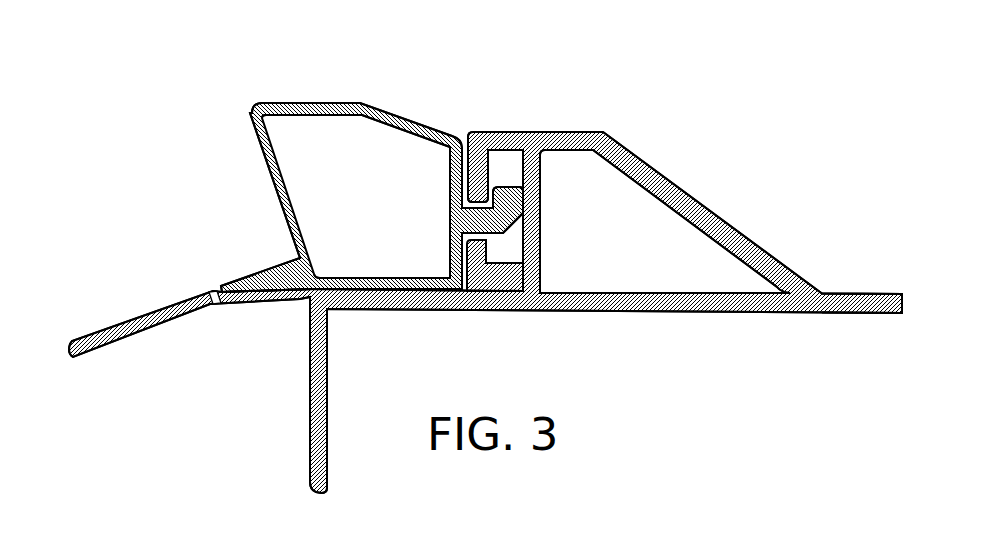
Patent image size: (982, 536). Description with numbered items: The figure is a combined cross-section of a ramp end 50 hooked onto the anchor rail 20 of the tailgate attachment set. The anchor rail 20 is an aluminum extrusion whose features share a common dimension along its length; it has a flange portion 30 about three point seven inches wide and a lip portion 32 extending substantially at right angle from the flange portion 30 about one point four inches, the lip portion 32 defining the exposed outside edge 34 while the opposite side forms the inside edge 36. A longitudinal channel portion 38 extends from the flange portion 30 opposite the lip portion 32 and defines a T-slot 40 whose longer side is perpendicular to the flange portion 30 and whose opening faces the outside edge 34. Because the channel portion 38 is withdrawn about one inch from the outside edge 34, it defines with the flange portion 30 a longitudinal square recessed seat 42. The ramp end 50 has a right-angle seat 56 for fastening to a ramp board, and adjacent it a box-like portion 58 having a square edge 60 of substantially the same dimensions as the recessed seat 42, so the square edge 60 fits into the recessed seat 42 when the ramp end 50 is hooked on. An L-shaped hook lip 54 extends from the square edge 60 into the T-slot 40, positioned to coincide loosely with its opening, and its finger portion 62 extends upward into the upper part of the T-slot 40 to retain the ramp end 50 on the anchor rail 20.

The anchor rail 20 is at (723, 117).
The flange portion 30 is at (594, 313).
The lip portion 32 is at (310, 428).
The outside edge 34 is at (300, 308).
The inside edge 36 is at (888, 313).
The channel portion 38 is at (542, 168).
The finger portion 62 is at (505, 187).
The ramp end 50 is at (223, 75).
The box-like portion 58 is at (380, 108).
The right-angle seat 56 is at (243, 280).
The recessed seat 42 is at (460, 170).
The square edge 60 is at (420, 280).
The L-shaped hook lip 54 is at (510, 226).
The T-slot 40 is at (527, 250).